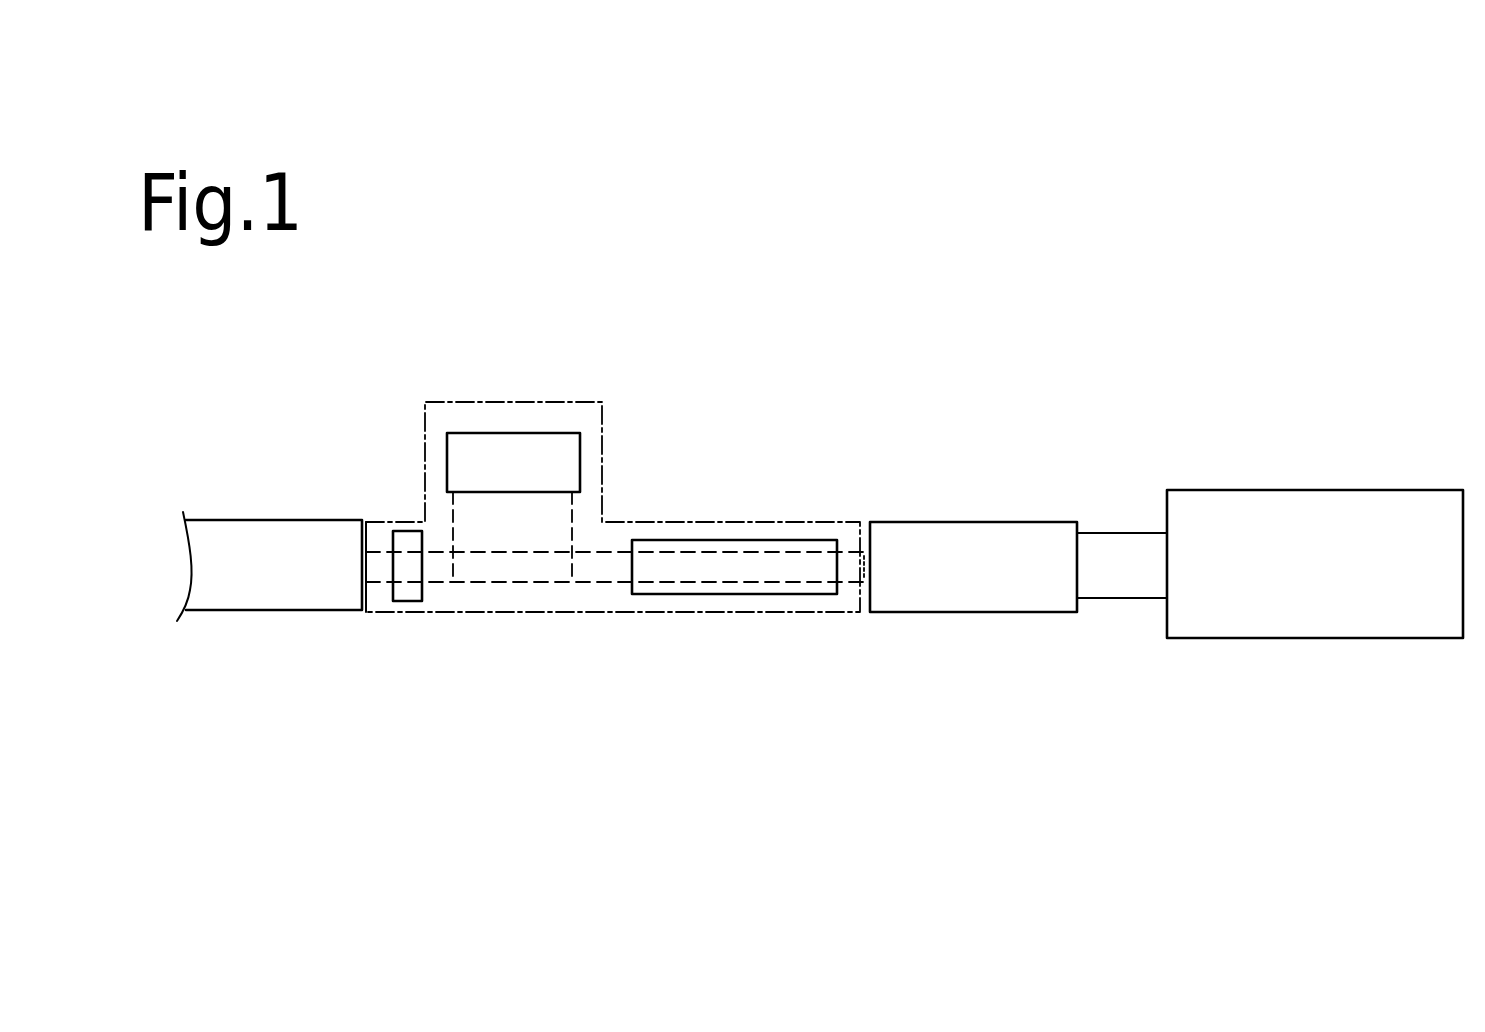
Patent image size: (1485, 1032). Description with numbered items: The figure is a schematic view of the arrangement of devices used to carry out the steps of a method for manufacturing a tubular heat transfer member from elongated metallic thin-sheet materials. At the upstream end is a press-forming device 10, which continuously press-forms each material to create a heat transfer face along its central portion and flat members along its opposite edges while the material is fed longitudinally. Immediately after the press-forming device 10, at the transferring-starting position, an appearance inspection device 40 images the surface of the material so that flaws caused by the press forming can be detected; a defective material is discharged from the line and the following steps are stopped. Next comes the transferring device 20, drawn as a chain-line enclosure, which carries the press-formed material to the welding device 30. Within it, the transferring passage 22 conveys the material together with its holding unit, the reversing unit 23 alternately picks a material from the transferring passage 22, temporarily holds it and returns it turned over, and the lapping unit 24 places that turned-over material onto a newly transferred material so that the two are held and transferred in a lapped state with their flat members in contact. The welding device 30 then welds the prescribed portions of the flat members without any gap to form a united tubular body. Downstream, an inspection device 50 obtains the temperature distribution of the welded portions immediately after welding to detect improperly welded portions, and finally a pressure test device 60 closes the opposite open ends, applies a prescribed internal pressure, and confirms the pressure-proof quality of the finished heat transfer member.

The press-forming device 10 is at (255, 602).
The transferring device 20 is at (603, 475).
The transferring passage 22 is at (553, 583).
The reversing unit 23 is at (515, 443).
The lapping unit 24 is at (710, 587).
The welding device 30 is at (965, 530).
The appearance inspection device 40 is at (403, 600).
The inspection device 50 is at (1113, 542).
The pressure test device 60 is at (1317, 493).